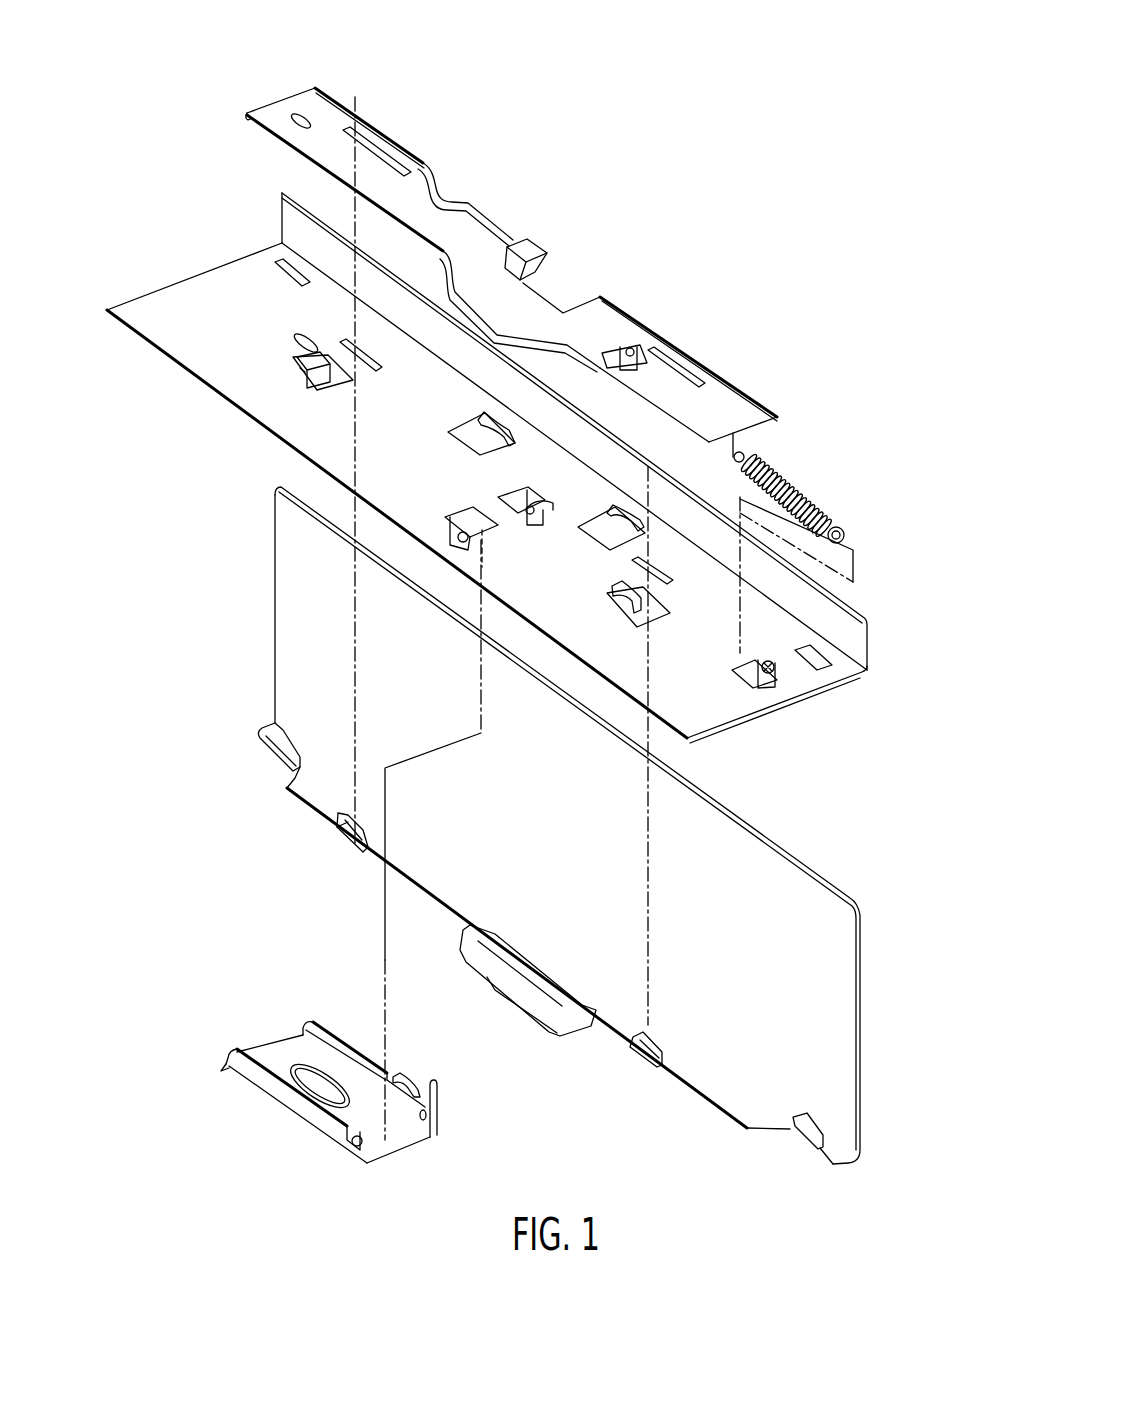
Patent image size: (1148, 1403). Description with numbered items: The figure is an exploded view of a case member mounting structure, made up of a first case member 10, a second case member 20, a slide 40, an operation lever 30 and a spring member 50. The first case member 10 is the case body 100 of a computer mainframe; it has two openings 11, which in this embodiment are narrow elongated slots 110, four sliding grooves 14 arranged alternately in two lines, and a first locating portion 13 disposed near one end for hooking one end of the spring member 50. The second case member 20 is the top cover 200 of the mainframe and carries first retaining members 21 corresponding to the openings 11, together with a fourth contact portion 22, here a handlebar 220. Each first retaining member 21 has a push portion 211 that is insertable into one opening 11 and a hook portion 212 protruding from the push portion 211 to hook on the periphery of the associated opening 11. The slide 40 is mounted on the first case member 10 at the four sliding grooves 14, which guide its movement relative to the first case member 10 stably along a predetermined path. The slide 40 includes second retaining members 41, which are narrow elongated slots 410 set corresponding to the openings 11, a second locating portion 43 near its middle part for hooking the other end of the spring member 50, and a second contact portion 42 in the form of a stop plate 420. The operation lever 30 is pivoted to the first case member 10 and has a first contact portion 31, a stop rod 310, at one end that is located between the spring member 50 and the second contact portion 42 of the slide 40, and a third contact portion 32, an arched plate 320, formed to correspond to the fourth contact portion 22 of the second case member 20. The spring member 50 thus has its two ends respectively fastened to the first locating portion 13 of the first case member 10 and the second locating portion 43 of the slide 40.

The first case member 10 is at (487, 468).
The case body 100 is at (170, 291).
The opening 11 is at (461, 556).
The narrow elongated slot 110 is at (333, 347).
The first locating portion 13 is at (770, 676).
The sliding groove 14 is at (300, 368).
The second case member 20 is at (567, 825).
The top cover 200 is at (812, 892).
The first retaining member 21 is at (352, 834).
The push portion 211 is at (330, 814).
The hook portion 212 is at (338, 836).
The fourth contact portion 22 is at (495, 980).
The handlebar 220 is at (503, 987).
The operation lever 30 is at (280, 1088).
The first contact portion 31 is at (486, 1108).
The stop rod 310 is at (437, 1100).
The third contact portion 32 is at (430, 1056).
The arched plate 320 is at (423, 1093).
The slide 40 is at (293, 107).
The second retaining member 41 is at (551, 230).
The narrow elongated slot 410 is at (388, 167).
The second contact portion 42 is at (549, 220).
The stop plate 420 is at (513, 243).
The second locating portion 43 is at (625, 350).
The spring member 50 is at (803, 493).